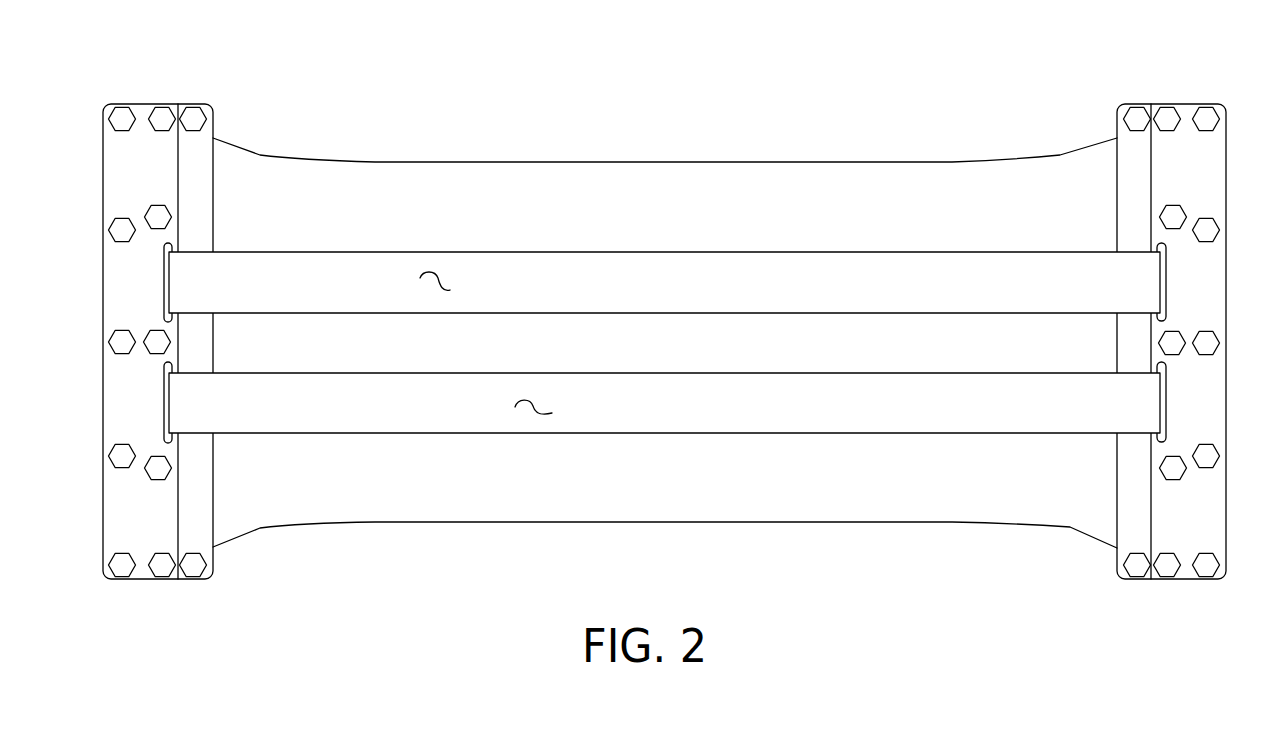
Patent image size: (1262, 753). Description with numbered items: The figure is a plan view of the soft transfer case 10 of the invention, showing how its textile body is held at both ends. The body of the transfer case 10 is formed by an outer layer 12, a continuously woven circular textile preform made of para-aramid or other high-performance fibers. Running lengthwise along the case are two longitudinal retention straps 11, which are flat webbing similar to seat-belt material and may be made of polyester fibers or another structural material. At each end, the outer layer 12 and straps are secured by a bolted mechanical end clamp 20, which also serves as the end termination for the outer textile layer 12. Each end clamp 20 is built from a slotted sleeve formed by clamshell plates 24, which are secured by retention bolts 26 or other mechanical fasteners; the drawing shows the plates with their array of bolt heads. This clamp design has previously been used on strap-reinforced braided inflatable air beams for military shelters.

The soft transfer case 10 is at (673, 333).
The longitudinal retention straps 11 is at (541, 385).
The outer layer 12 is at (924, 161).
The mechanical end clamp 20 is at (146, 580).
The clamshell plates 24 is at (1177, 578).
The retention bolts 26 is at (1134, 577).